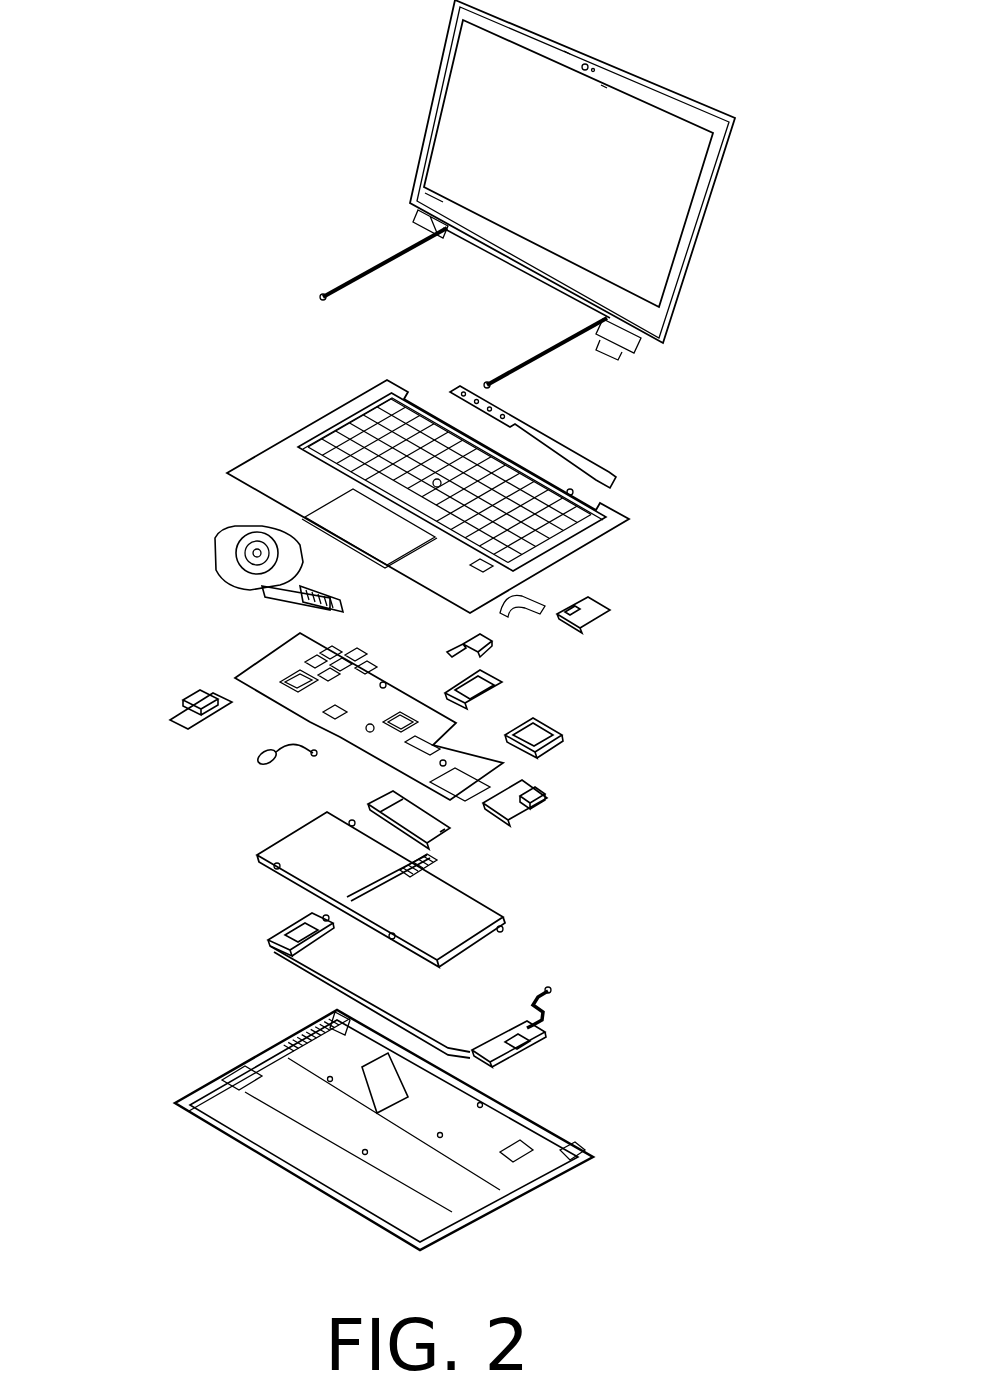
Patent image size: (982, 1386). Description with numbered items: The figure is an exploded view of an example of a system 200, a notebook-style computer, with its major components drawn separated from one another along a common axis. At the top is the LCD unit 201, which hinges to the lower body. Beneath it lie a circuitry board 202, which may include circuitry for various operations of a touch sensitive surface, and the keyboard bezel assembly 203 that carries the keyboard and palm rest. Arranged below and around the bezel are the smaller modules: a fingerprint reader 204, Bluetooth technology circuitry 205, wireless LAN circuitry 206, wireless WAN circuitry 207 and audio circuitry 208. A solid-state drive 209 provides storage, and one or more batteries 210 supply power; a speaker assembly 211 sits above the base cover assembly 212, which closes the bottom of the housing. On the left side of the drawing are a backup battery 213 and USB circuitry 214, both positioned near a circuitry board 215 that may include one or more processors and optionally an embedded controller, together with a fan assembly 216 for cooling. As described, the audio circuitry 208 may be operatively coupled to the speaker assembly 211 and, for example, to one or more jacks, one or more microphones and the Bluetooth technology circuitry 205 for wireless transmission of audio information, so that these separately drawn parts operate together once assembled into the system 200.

The system 200 is at (248, 101).
The LCD unit 201 is at (693, 100).
The circuitry board 202 is at (617, 475).
The keyboard bezel assembly 203 is at (578, 557).
The fingerprint reader 204 is at (607, 623).
The Bluetooth technology circuitry 205 is at (491, 648).
The wireless LAN circuitry 206 is at (503, 685).
The wireless WAN circuitry 207 is at (565, 740).
The audio circuitry 208 is at (549, 800).
The solid-state drive 209 is at (452, 831).
The batteries 210 is at (505, 922).
The speaker assembly 211 is at (543, 1033).
The base cover assembly 212 is at (575, 1172).
The backup battery 213 is at (255, 757).
The USB circuitry 214 is at (175, 707).
The circuitry board 215 is at (248, 672).
The fan assembly 216 is at (215, 553).